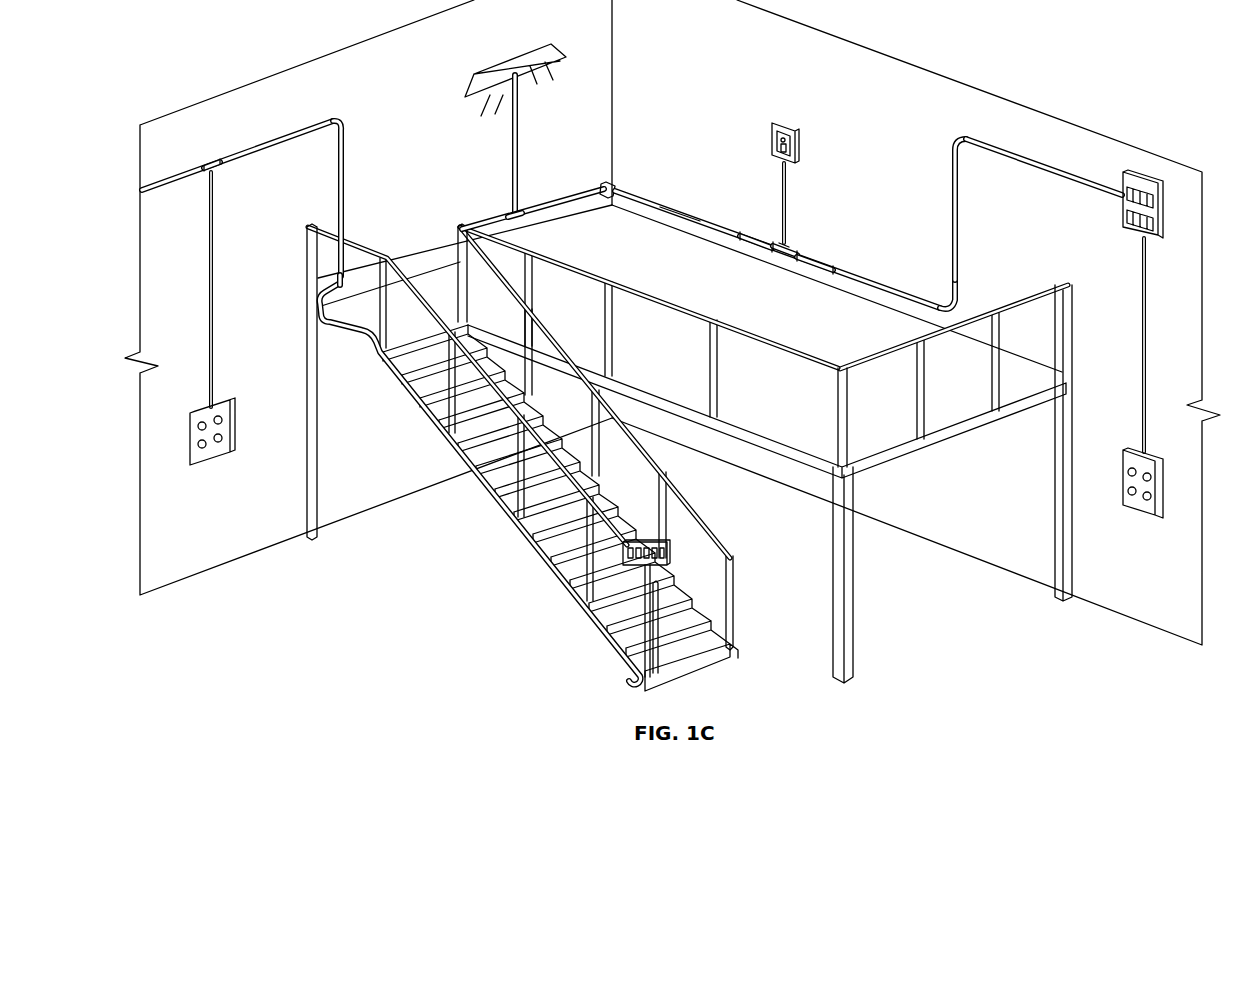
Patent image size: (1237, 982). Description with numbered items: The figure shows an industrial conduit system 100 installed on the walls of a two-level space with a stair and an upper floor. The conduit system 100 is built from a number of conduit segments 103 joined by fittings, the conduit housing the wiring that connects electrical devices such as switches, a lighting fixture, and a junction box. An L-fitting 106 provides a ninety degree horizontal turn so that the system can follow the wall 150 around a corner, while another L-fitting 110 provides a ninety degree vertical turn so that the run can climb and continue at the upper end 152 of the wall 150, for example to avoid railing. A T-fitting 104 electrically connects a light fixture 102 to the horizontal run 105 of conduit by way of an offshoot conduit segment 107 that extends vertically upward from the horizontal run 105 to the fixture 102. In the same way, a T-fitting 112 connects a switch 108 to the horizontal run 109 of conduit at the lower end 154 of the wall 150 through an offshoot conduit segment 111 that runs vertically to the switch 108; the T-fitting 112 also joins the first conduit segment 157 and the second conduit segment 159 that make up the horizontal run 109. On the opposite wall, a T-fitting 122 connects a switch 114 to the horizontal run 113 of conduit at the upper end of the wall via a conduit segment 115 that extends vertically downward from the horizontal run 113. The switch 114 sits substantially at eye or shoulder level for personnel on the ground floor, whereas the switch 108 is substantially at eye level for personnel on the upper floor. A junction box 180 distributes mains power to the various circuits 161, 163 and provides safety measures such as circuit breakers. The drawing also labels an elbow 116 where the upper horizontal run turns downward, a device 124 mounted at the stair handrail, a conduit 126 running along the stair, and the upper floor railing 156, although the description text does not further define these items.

The conduit system 100 is at (1038, 205).
The light fixture 102 is at (467, 77).
The conduit segments 103 is at (1027, 155).
The T-fitting 104 is at (500, 218).
The horizontal run 105 is at (478, 219).
The L-fitting 106 is at (614, 183).
The offshoot conduit segment 107 is at (520, 142).
The switch 108 is at (787, 125).
The horizontal run 109 is at (680, 200).
The L-fitting 110 is at (944, 316).
The offshoot conduit segment 111 is at (788, 208).
The T-fitting 112 is at (786, 256).
The horizontal run 113 is at (273, 293).
The switch 114 is at (213, 462).
The conduit segment 115 is at (208, 313).
The conduit elbow 116 is at (343, 120).
The T-fitting 122 is at (213, 167).
The control device 124 is at (667, 555).
The conduit along stairs 126 is at (628, 678).
The wall 150 is at (801, 281).
The upper end of wall 152 is at (898, 82).
The lower end of wall 154 is at (655, 211).
The railing 156 is at (1022, 370).
The first conduit segment 157 is at (742, 245).
The second conduit segment 159 is at (833, 276).
The circuit 161 is at (777, 163).
The circuit 163 is at (1152, 350).
The junction box 180 is at (1145, 172).